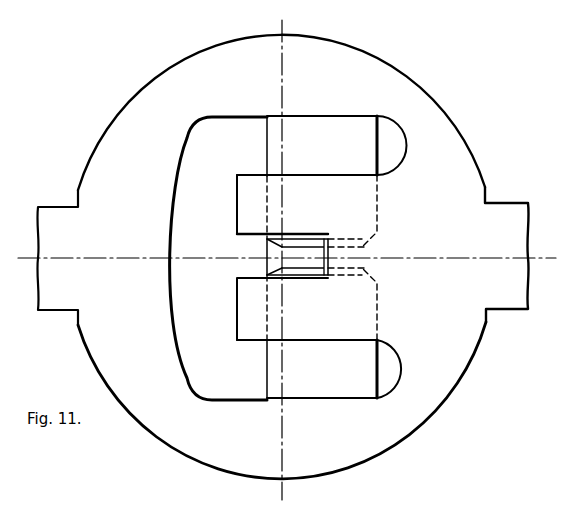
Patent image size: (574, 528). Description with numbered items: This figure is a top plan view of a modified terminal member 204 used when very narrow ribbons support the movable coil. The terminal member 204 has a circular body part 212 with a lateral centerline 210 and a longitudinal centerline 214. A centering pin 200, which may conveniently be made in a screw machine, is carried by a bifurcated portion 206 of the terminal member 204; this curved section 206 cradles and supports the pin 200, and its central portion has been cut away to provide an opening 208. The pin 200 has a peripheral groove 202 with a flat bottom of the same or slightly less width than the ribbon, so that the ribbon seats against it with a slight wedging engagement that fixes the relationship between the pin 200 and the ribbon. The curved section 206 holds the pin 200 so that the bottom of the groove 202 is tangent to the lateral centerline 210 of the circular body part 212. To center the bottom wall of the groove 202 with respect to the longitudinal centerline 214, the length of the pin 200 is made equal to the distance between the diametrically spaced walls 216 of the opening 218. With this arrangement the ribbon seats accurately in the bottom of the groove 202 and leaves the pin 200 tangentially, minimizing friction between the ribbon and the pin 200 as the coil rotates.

The centering pin 200 is at (358, 356).
The groove 202 is at (279, 259).
The terminal member 204 is at (455, 83).
The bifurcated portion 206 is at (305, 181).
The opening 208 is at (246, 247).
The lateral centerline 210 is at (284, 447).
The circular body part 212 is at (234, 100).
The longitudinal centerline 214 is at (426, 257).
The diametrically spaced walls 216 is at (287, 117).
The opening 218 is at (218, 171).